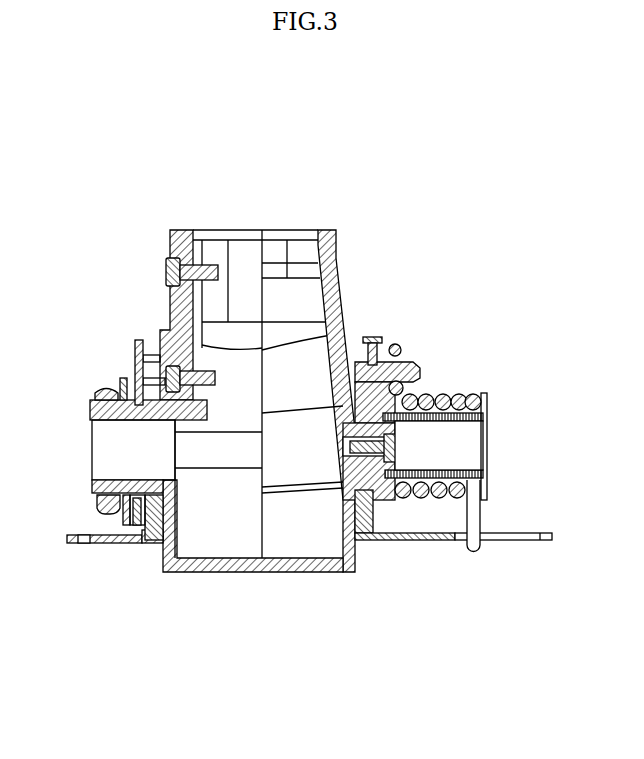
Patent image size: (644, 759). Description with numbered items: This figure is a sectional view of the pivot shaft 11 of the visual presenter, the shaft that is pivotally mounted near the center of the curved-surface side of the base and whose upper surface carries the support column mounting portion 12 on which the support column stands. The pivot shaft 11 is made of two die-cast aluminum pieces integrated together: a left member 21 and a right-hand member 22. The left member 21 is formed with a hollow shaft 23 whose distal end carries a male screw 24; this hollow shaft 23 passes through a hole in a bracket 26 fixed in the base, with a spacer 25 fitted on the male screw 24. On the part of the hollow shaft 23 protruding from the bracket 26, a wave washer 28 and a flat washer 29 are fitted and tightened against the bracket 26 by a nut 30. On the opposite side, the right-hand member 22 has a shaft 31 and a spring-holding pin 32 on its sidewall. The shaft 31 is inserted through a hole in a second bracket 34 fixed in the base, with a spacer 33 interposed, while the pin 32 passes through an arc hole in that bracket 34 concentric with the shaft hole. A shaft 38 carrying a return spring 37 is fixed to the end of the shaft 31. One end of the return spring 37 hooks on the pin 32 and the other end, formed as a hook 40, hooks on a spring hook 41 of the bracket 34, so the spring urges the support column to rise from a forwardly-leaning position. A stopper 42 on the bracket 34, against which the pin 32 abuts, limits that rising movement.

The pivot shaft 11 is at (268, 212).
The support column mounting portion 12 is at (272, 262).
The left member 21 is at (173, 315).
The right-hand member 22 is at (343, 312).
The hollow shaft 23 is at (110, 440).
The male screw 24 is at (95, 483).
The spacer 25 is at (168, 570).
The bracket 26 is at (137, 355).
The wave washer 28 is at (97, 395).
The flat washer 29 is at (128, 513).
The nut 30 is at (107, 512).
The shaft 31 is at (343, 505).
The spring-holding pin 32 is at (418, 365).
The spacer 33 is at (362, 533).
The bracket 34 is at (420, 540).
The return spring 37 is at (465, 395).
The shaft 38 is at (462, 443).
The hook 40 is at (473, 518).
The spring hook 41 is at (508, 537).
The stopper 42 is at (382, 338).